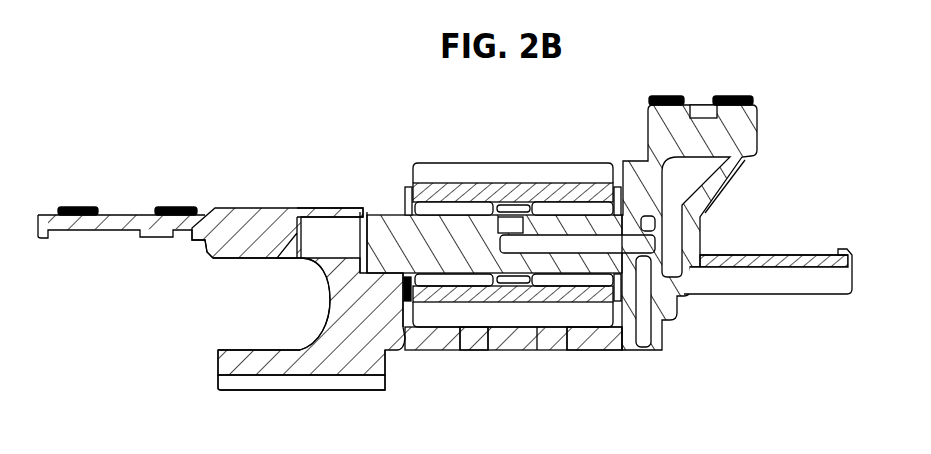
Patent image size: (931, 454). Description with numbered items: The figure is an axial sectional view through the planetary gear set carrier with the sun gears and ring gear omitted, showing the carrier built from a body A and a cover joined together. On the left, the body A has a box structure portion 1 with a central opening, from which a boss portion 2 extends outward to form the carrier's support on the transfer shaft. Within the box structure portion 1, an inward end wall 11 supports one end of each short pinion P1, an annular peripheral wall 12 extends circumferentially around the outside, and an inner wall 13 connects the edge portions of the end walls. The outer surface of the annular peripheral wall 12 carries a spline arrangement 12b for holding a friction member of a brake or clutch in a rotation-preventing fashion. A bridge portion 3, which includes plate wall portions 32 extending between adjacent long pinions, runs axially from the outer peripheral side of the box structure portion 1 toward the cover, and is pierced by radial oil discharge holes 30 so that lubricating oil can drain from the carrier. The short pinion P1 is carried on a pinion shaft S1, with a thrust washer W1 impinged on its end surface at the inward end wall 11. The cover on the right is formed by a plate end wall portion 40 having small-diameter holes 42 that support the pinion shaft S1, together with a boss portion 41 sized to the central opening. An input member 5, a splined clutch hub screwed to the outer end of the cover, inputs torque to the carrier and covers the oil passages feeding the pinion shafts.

The box structure portion 1 is at (283, 207).
The boss portion 2 is at (127, 222).
The bridge portion 3 is at (514, 354).
The input member 5 is at (781, 292).
The inward end wall 11 is at (335, 308).
The annular peripheral wall 12 is at (290, 377).
The spline arrangement 12b is at (334, 385).
The inner wall 13 is at (294, 212).
The oil discharge holes 30 is at (487, 343).
The plate wall portions 32 is at (586, 349).
The plate end wall portion 40 is at (668, 316).
The boss portion 41 is at (759, 137).
The small-diameter holes 42 is at (655, 225).
The body A is at (222, 264).
The short pinion P1 is at (505, 178).
The pinion shaft S1 is at (385, 214).
The thrust washer W1 is at (408, 188).